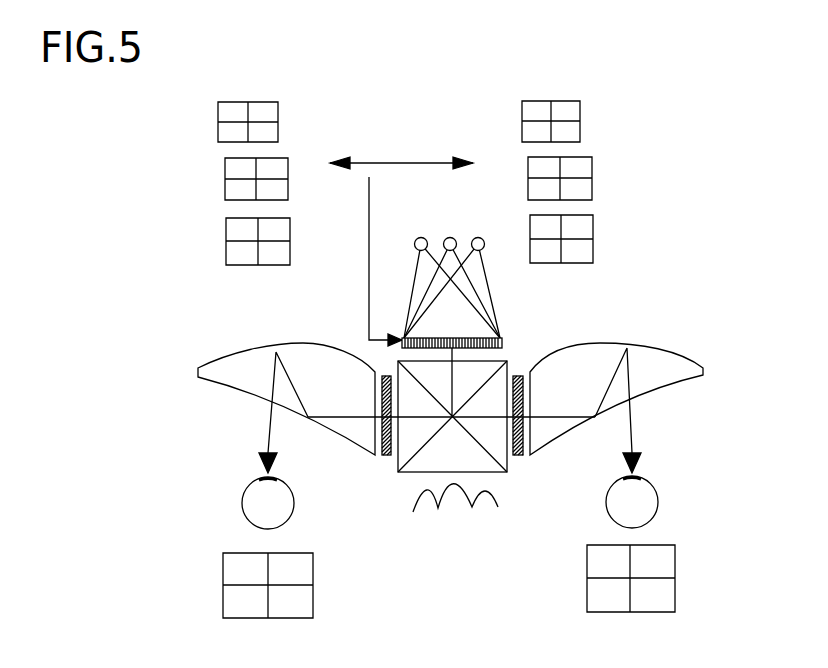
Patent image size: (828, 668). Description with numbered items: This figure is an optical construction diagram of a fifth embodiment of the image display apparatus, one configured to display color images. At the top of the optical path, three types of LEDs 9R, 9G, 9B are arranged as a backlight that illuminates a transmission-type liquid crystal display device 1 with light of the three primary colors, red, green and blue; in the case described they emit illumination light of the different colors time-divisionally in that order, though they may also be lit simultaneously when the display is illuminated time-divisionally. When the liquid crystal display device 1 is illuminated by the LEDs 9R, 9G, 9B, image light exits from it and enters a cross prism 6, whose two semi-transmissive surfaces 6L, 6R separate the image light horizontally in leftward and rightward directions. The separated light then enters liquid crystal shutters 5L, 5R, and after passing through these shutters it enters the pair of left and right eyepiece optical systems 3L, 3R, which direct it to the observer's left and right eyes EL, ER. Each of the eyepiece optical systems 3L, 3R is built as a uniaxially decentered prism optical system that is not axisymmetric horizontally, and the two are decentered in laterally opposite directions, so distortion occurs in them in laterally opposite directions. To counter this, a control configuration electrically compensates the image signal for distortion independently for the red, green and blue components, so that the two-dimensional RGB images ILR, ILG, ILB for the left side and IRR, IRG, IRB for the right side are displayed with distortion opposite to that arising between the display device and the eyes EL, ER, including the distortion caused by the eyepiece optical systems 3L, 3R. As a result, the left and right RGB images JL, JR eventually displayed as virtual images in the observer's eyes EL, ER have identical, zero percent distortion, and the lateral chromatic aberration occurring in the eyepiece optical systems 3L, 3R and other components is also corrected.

The transmission-type liquid crystal display device 1 is at (503, 340).
The cross prism 6 is at (507, 362).
The semi-transmissive surface 6L is at (408, 470).
The semi-transmissive surface 6R is at (498, 472).
The liquid crystal shutter 5L is at (386, 457).
The liquid crystal shutter 5R is at (518, 457).
The eyepiece optical system 3L is at (240, 351).
The eyepiece optical system 3R is at (648, 345).
The LED 9R is at (418, 237).
The LED 9G is at (450, 237).
The LED 9B is at (480, 237).
The observer's left eye EL is at (242, 505).
The observer's right eye ER is at (658, 500).
The left R image ILR is at (220, 111).
The left G image ILG is at (227, 166).
The left B image ILB is at (227, 230).
The right R image IRR is at (580, 130).
The right G image IRG is at (592, 185).
The right B image IRB is at (593, 245).
The left image JL is at (222, 600).
The right image JR is at (676, 590).